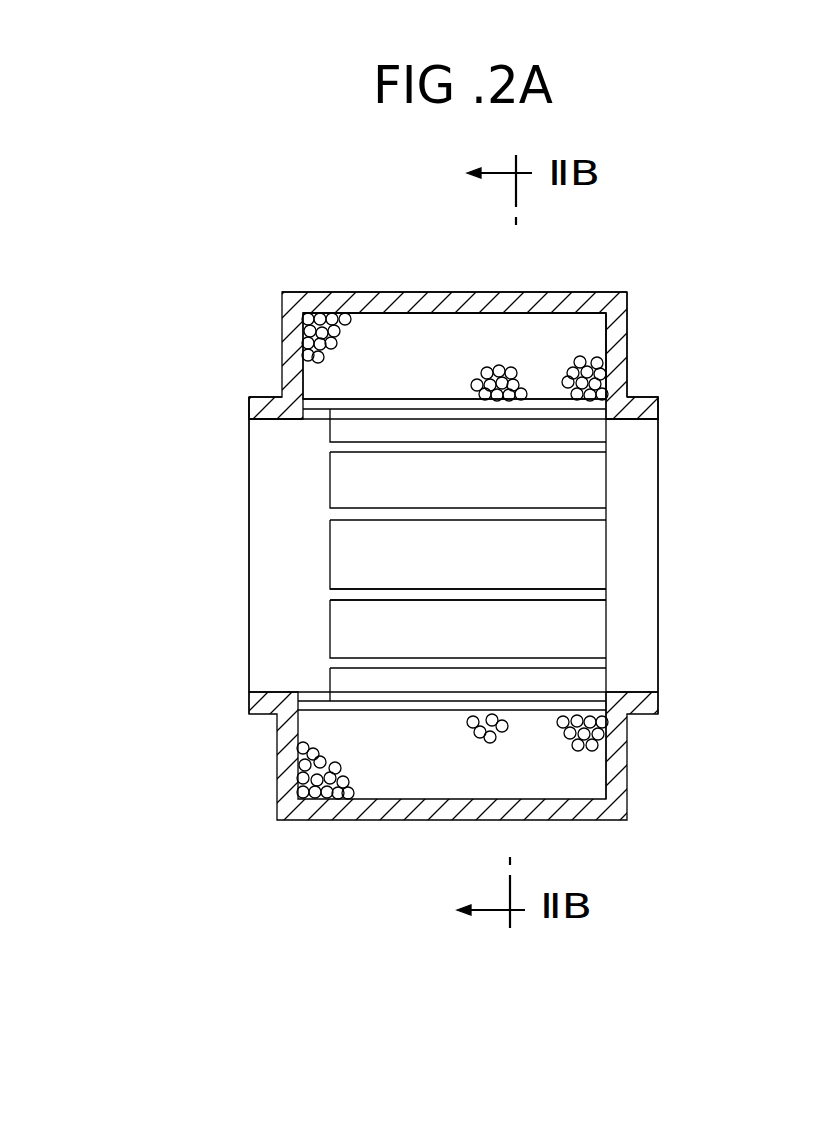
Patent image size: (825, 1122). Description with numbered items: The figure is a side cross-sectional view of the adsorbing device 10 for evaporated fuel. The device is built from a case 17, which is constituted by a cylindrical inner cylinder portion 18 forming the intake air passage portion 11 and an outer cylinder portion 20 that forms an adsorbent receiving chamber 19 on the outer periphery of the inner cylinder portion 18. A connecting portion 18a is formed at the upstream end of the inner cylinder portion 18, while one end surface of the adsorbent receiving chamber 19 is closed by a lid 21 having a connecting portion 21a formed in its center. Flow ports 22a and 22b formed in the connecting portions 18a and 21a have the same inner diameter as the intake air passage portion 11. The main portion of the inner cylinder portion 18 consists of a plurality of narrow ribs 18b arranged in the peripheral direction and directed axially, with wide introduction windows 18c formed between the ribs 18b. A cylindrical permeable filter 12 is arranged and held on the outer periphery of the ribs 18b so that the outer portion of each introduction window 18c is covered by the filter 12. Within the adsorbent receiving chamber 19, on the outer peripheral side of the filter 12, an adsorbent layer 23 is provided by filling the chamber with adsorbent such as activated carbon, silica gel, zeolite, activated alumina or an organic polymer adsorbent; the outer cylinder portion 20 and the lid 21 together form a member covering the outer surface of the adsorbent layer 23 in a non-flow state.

The adsorbing device 10 is at (283, 270).
The case 17 is at (390, 288).
The adsorbent receiving chamber 19 is at (428, 328).
The outer cylinder portion 20 is at (570, 298).
The lid 21 is at (618, 342).
The connecting portion 21a is at (640, 410).
The inner cylinder portion 18 is at (264, 538).
The connecting portion 18a is at (267, 405).
The ribs 18b is at (590, 450).
The introduction windows 18c is at (587, 582).
The flow port 22a is at (267, 473).
The flow port 22b is at (640, 678).
The intake air passage portion 11 is at (339, 561).
The permeable filter 12 is at (432, 705).
The adsorbent layer 23 is at (323, 798).